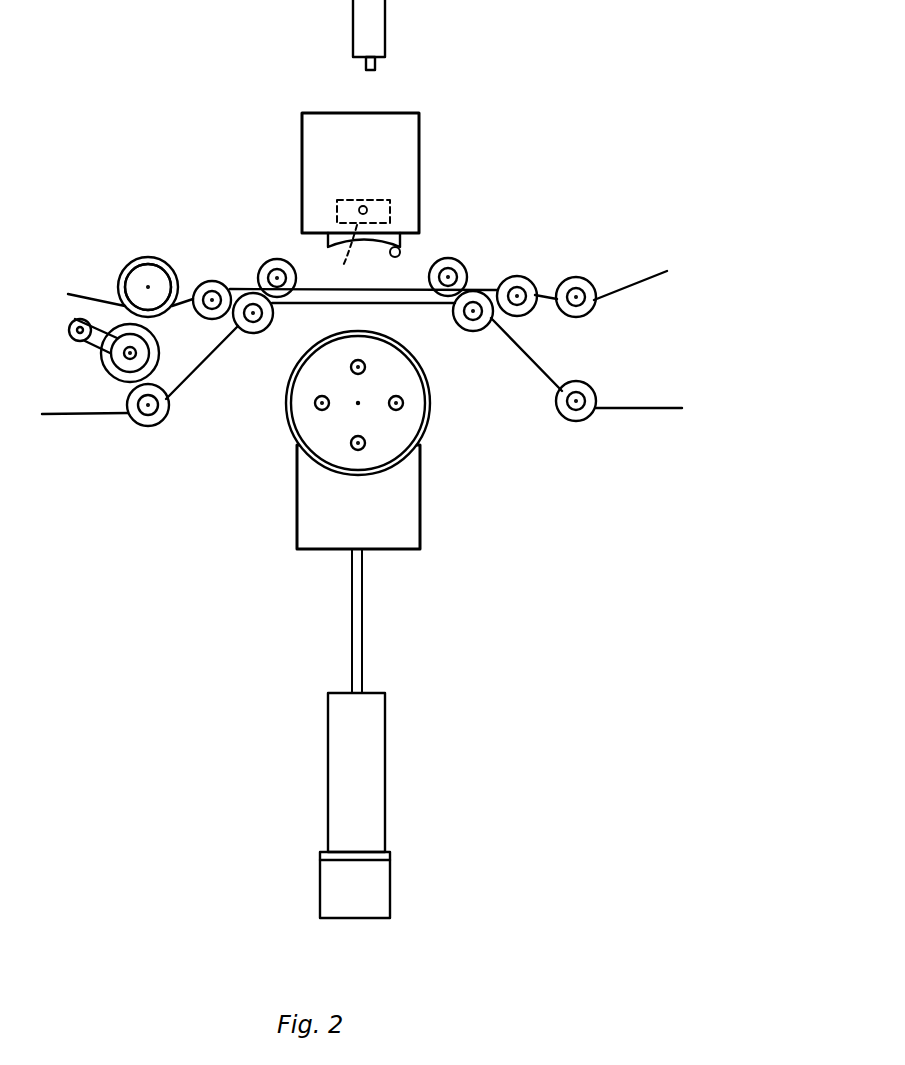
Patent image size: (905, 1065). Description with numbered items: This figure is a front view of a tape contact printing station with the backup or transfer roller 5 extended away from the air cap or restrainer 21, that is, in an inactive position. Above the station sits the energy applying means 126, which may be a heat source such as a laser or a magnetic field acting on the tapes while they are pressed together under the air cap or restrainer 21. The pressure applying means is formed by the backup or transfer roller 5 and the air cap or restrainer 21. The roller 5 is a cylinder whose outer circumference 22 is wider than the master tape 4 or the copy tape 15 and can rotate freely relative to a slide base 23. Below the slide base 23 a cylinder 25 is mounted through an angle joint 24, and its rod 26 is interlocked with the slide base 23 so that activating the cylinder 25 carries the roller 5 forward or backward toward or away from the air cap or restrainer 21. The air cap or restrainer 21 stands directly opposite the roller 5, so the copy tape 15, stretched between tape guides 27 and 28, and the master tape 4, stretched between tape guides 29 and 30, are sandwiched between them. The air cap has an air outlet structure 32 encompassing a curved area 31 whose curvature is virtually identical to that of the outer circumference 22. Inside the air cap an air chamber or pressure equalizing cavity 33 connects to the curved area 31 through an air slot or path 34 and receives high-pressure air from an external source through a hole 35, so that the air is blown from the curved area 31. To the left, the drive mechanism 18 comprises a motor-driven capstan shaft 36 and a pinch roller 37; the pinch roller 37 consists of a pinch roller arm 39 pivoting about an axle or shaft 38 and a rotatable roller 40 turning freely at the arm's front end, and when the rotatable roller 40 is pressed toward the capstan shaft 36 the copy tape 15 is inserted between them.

The energy applying means 126 is at (380, 18).
The air cap or restrainer 21 is at (418, 214).
The air chamber or pressure equalizing cavity 33 is at (390, 201).
The hole 35 is at (359, 210).
The air outlet structure 32 is at (330, 240).
The curved area 31 is at (400, 253).
The air slot or path 34 is at (360, 253).
The copy tape 15 is at (656, 270).
The master tape 4 is at (540, 382).
The tape guide 27 is at (208, 281).
The tape guide 29 is at (250, 333).
The tape guide 30 is at (472, 325).
The tape guide 28 is at (512, 277).
The drive mechanism 18 is at (146, 229).
The capstan shaft 36 is at (158, 270).
The pinch roller arm 39 is at (102, 332).
The axle or shaft 38 is at (72, 327).
The pinch roller 37 is at (90, 348).
The rotatable roller 40 is at (156, 368).
The slide base 23 is at (410, 494).
The outer circumference 22 is at (432, 384).
The backup or transfer roller 5 is at (405, 428).
The rod 26 is at (360, 620).
The cylinder 25 is at (373, 756).
The angle joint 24 is at (378, 884).